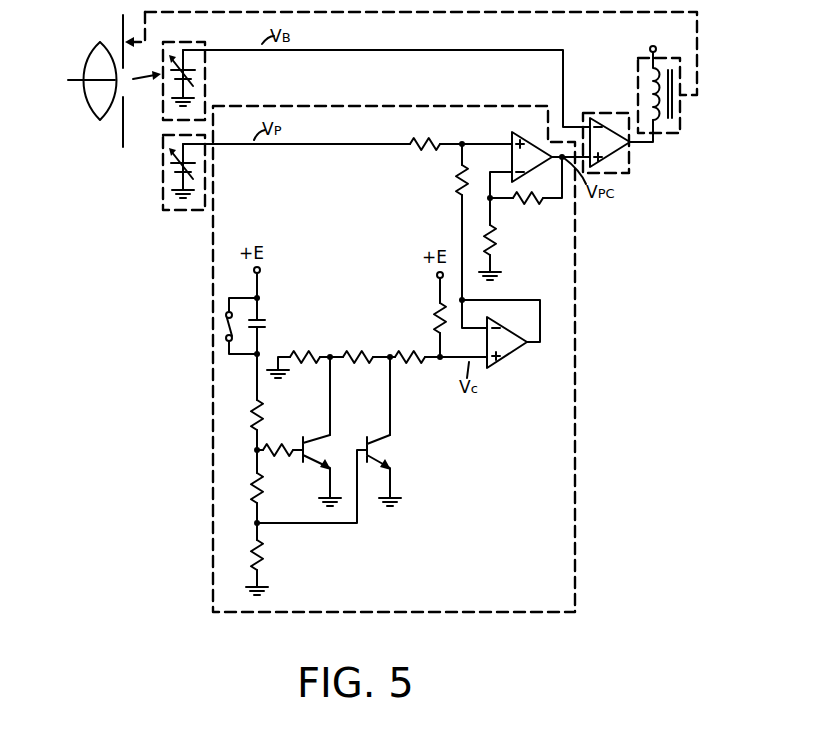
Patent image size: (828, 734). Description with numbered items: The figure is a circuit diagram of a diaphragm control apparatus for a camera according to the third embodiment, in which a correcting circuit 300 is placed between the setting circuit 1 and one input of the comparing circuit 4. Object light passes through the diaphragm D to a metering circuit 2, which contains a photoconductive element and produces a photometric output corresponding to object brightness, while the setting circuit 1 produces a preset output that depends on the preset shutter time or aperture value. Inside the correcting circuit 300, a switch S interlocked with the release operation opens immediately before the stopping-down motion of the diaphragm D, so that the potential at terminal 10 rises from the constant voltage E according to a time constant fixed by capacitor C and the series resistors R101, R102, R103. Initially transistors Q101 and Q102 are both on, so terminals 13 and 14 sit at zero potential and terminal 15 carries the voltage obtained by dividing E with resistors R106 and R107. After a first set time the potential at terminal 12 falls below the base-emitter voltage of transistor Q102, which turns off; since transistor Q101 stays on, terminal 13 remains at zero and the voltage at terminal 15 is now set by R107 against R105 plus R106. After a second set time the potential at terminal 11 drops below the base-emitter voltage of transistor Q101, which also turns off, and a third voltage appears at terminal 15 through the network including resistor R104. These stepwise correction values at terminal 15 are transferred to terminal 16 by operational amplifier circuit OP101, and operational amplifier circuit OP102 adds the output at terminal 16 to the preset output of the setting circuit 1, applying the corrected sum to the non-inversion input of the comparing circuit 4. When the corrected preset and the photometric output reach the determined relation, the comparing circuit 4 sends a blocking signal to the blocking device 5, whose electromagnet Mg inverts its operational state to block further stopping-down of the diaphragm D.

The setting circuit 1 is at (162, 184).
The metering circuit 2 is at (206, 80).
The comparing circuit 4 is at (610, 112).
The blocking device 5 is at (656, 81).
The terminal 10 is at (256, 358).
The terminal 11 is at (255, 450).
The terminal 12 is at (255, 522).
The terminal 13 is at (329, 361).
The terminal 14 is at (388, 362).
The terminal 15 is at (440, 362).
The terminal 16 is at (461, 303).
The correcting circuit 300 is at (212, 507).
The diaphragm D is at (122, 27).
The switch S is at (226, 322).
The capacitor C is at (262, 318).
The electromagnet Mg is at (645, 78).
The resistor R101 is at (250, 420).
The resistor R102 is at (262, 490).
The resistor R103 is at (262, 555).
The resistor R104 is at (318, 351).
The resistor R105 is at (374, 351).
The resistor R106 is at (428, 351).
The resistor R107 is at (436, 318).
The transistor Q101 is at (322, 438).
The transistor Q102 is at (382, 443).
The operational amplifier circuit OP101 is at (513, 352).
The operational amplifier circuit OP102 is at (514, 134).